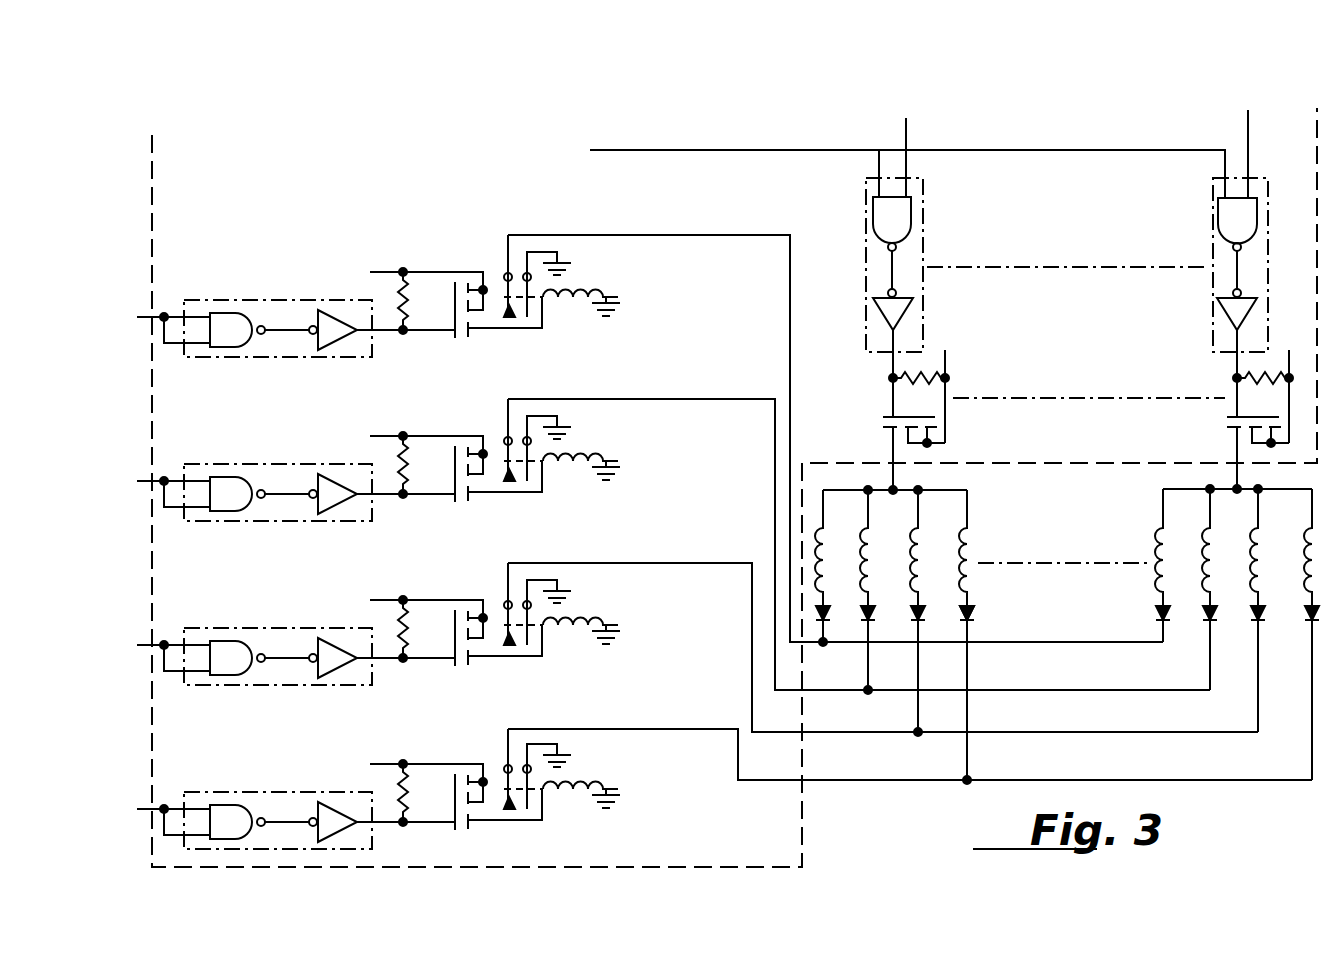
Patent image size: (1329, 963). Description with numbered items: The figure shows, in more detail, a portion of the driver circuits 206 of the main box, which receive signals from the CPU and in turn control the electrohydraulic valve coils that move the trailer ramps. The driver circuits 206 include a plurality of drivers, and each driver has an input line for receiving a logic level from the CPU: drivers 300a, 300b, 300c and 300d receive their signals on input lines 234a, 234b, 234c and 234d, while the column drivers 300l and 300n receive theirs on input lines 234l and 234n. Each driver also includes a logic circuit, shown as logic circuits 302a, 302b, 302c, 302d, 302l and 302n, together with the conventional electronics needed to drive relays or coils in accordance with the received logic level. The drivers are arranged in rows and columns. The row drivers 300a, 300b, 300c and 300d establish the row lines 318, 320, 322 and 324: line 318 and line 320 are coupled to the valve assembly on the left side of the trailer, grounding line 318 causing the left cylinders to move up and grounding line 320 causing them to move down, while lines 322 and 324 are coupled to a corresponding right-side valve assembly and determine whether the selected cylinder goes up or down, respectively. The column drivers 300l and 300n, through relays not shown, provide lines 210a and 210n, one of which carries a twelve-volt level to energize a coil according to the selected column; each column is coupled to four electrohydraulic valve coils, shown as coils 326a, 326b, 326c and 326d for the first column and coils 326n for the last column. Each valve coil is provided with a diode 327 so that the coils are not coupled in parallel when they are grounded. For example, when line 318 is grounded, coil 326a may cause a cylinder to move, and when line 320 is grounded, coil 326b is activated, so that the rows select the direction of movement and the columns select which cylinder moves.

The driver circuits 206 is at (150, 178).
The input line 234a is at (156, 312).
The input line 234b is at (165, 476).
The input line 234c is at (158, 640).
The input line 234d is at (160, 805).
The input line 234l is at (906, 130).
The input line 234n is at (1248, 126).
The driver 300a is at (434, 263).
The driver 300b is at (446, 428).
The driver 300c is at (439, 594).
The driver 300d is at (448, 759).
The driver 300l is at (942, 235).
The driver 300n is at (1204, 228).
The logic circuit 302a is at (253, 298).
The logic circuit 302b is at (268, 460).
The logic circuit 302c is at (262, 626).
The logic circuit 302d is at (270, 790).
The logic circuit 302l is at (927, 328).
The logic circuit 302n is at (1212, 323).
The row line 318 is at (708, 233).
The row line 320 is at (706, 396).
The row line 322 is at (690, 561).
The row line 324 is at (706, 725).
The line 210a is at (892, 451).
The line 210n is at (1237, 451).
The valve coil 326a is at (815, 558).
The valve coil 326b is at (862, 554).
The valve coil 326c is at (913, 552).
The valve coil 326d is at (963, 548).
The valve coil 326n is at (1308, 548).
The diode 327 is at (972, 616).